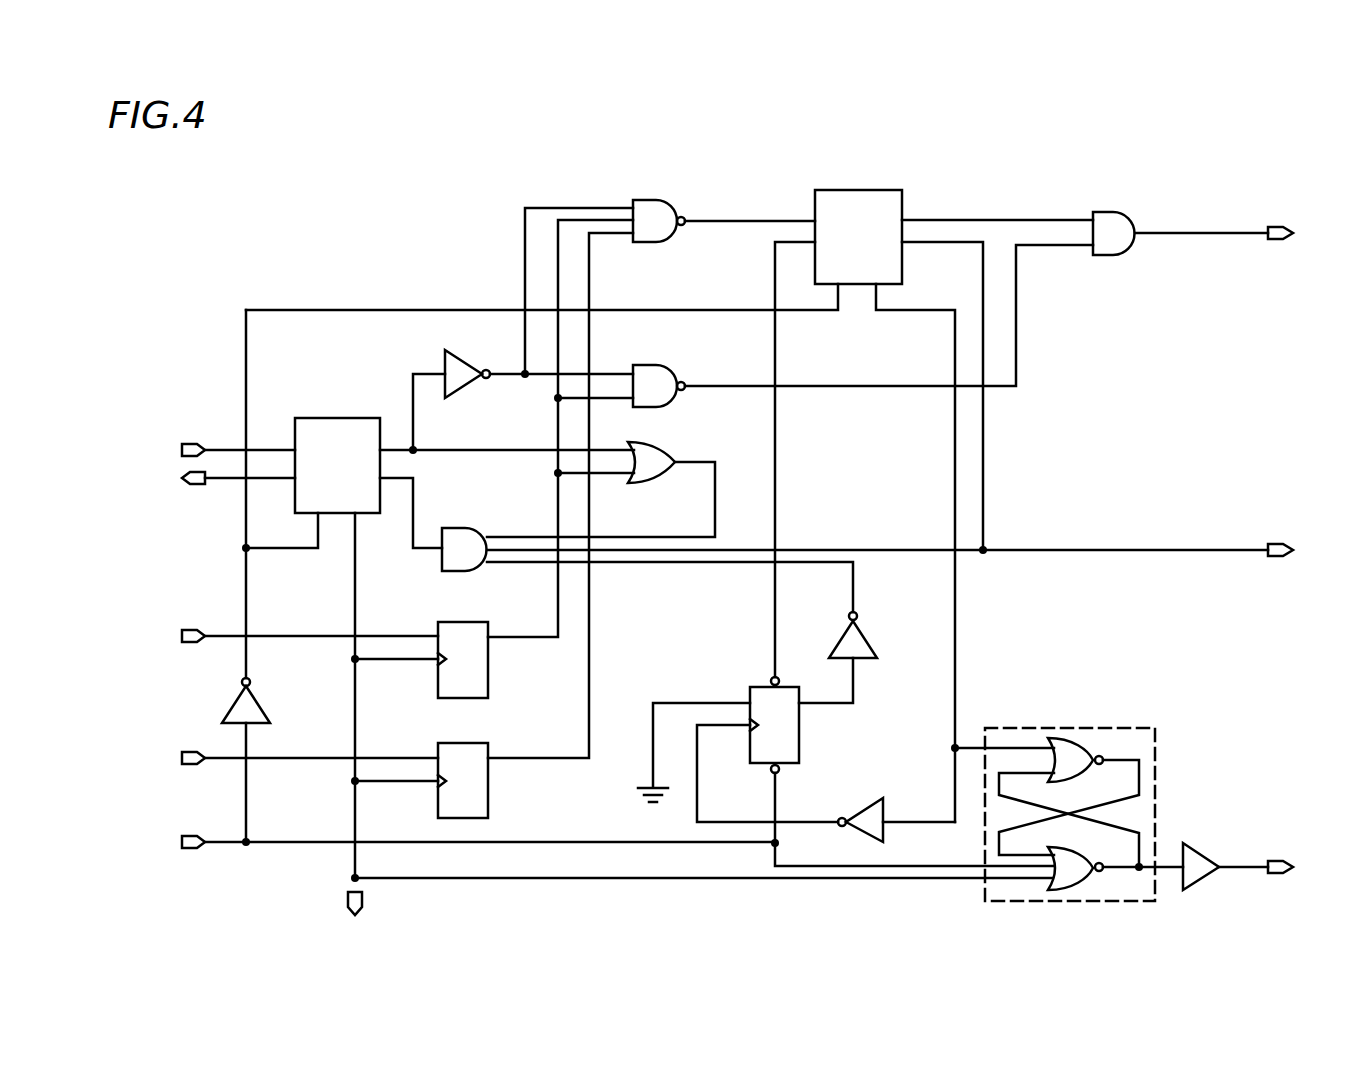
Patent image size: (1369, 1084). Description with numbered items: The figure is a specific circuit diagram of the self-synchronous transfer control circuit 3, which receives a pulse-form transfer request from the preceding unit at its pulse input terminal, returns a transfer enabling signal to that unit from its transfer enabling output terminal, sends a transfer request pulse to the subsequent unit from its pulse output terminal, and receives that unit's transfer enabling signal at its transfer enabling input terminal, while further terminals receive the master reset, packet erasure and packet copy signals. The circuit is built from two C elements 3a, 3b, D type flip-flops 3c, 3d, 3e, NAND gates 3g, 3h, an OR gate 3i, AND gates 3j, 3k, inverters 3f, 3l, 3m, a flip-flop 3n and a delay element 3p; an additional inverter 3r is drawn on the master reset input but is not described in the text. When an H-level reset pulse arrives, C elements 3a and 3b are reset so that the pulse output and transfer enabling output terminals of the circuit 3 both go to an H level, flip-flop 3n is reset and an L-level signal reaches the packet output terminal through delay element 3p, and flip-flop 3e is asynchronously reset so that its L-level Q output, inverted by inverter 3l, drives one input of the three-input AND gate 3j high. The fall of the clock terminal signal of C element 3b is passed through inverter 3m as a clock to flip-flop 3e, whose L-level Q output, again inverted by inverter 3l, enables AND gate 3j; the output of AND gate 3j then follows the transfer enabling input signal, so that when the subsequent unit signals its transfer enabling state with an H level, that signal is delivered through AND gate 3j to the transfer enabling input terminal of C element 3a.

The self-synchronous transfer control circuit 3 is at (1294, 180).
The C element 3a is at (330, 418).
The C element 3b is at (856, 190).
The D type flip-flop 3c is at (470, 622).
The D type flip-flop 3d is at (470, 743).
The D type flip-flop 3e is at (800, 726).
The inverter 3f is at (468, 356).
The NAND gate 3g is at (666, 200).
The NAND gate 3h is at (666, 365).
The OR gate 3i is at (663, 443).
The AND gate 3j is at (470, 528).
The AND gate 3k is at (1112, 212).
The inverter 3l is at (872, 640).
The inverter 3m is at (858, 812).
The flip-flop 3n is at (1104, 728).
The delay element 3p is at (1205, 856).
The inverter 3r is at (262, 700).